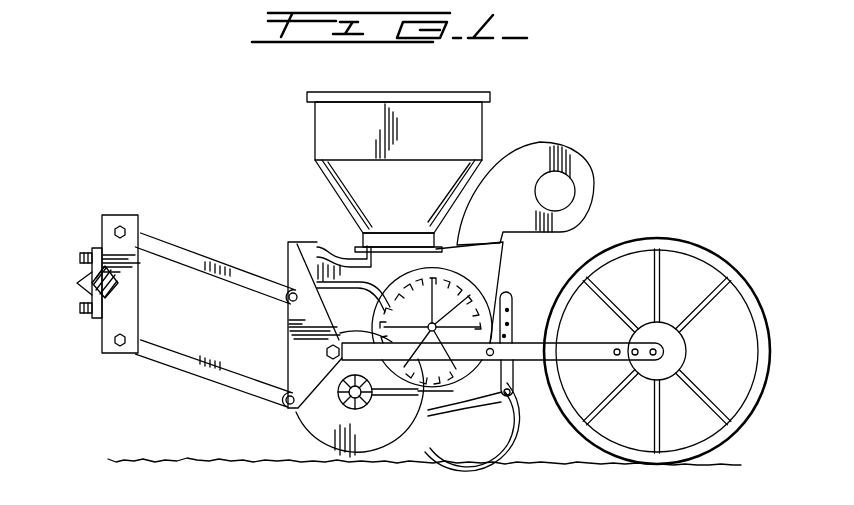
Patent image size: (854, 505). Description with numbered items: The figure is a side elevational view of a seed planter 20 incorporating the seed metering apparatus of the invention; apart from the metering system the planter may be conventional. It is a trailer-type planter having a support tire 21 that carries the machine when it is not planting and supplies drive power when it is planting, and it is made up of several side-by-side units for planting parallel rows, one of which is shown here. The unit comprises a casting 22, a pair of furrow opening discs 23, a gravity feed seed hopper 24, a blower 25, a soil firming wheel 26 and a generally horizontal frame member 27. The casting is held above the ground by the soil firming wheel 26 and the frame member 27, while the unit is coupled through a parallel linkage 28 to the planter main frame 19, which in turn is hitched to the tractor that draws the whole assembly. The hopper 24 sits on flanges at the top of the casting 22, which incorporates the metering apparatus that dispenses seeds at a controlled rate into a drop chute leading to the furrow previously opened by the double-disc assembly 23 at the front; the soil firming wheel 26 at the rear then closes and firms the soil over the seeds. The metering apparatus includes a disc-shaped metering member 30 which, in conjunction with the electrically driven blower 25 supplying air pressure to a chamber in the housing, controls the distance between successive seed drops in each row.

The planter main frame 19 is at (88, 294).
The seed planter 20 is at (289, 233).
The support tire 21 is at (484, 426).
The casting 22 is at (327, 257).
The furrow opening discs 23 is at (333, 437).
The gravity feed seed hopper 24 is at (468, 131).
The blower 25 is at (590, 186).
The soil firming wheel 26 is at (693, 252).
The frame member 27 is at (527, 342).
The parallel linkage 28 is at (180, 255).
The disc-shaped metering member 30 is at (444, 377).